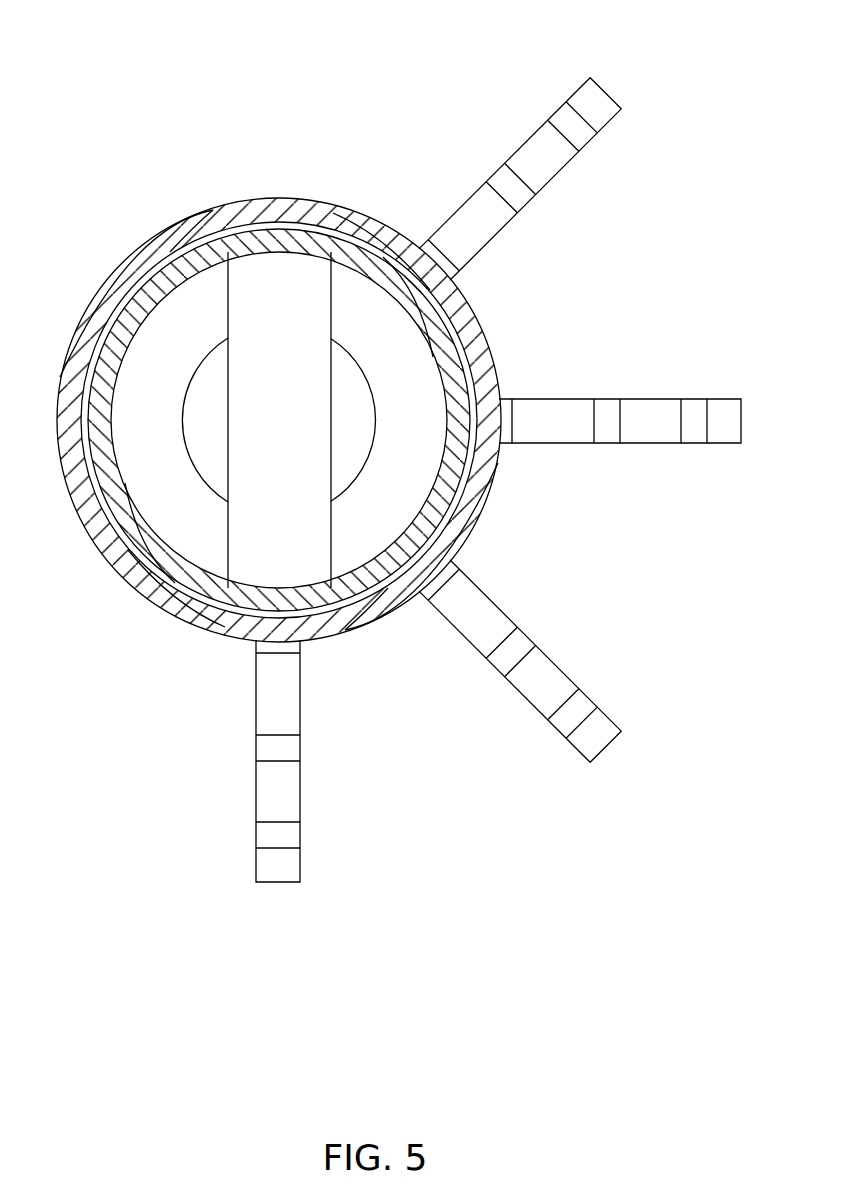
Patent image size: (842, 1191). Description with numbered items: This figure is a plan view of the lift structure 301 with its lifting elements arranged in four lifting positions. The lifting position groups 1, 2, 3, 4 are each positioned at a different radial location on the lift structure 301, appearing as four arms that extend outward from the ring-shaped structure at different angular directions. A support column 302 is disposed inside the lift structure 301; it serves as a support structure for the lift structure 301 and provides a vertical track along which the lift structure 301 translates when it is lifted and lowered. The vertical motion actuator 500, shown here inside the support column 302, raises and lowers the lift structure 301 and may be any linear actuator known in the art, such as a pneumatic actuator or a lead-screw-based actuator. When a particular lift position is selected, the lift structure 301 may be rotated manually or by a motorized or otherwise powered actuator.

The lifting position group 1 is at (618, 87).
The lifting position group 2 is at (752, 423).
The lifting position group 3 is at (620, 753).
The lifting position group 4 is at (274, 893).
The lift structure 301 is at (215, 217).
The support column 302 is at (112, 360).
The vertical motion actuator 500 is at (261, 428).